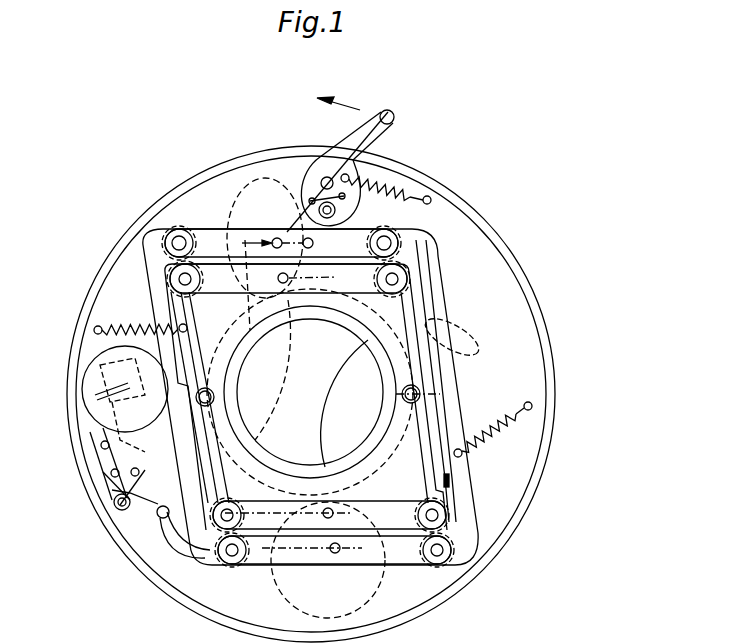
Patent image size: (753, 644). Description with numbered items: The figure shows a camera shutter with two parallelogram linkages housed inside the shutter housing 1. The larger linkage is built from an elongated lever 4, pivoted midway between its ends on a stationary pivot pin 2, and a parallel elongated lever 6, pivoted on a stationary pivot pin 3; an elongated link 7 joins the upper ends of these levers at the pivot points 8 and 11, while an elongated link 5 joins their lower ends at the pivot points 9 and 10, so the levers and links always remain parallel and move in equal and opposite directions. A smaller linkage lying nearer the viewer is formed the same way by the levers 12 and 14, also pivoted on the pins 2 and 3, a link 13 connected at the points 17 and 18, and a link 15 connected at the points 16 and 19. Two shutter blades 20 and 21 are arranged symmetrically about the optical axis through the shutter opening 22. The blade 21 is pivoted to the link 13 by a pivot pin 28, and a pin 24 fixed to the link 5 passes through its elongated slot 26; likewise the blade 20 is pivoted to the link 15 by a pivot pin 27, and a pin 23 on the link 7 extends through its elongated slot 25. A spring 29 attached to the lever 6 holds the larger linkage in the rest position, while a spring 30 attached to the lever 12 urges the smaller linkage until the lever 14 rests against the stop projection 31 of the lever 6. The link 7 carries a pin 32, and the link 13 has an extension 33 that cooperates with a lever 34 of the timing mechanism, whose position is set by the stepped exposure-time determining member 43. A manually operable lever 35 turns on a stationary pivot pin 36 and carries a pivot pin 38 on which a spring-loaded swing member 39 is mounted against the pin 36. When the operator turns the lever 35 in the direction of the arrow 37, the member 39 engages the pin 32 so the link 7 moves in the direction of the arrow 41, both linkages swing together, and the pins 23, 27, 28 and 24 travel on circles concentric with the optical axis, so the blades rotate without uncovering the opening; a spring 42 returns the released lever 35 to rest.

The shutter housing 1 is at (207, 172).
The stationary pivot pin 2 is at (205, 388).
The stationary pivot pin 3 is at (419, 394).
The elongated lever 4 is at (193, 497).
The elongated link 5 is at (370, 558).
The elongated lever 6 is at (438, 324).
The elongated link 7 is at (218, 240).
The pivot point 8 is at (181, 236).
The pivot point 9 is at (231, 553).
The pivot point 10 is at (437, 556).
The pivot point 11 is at (391, 242).
The lever 12 is at (133, 494).
The link 13 is at (410, 516).
The lever 14 is at (413, 313).
The link 15 is at (207, 283).
The pivot point 16 is at (179, 279).
The pivot point 17 is at (225, 518).
The pivot point 18 is at (438, 515).
The pivot point 19 is at (398, 277).
The shutter blade 20 is at (293, 374).
The shutter blade 21 is at (327, 400).
The shutter opening 22 is at (345, 318).
The pin 23 is at (274, 239).
The pin 24 is at (338, 546).
The elongated slot 25 is at (318, 214).
The elongated slot 26 is at (338, 578).
The pivot pin 27 is at (279, 282).
The pivot pin 28 is at (325, 508).
The spring 29 is at (500, 433).
The spring 30 is at (148, 325).
The projection 31 is at (451, 481).
The pin 32 is at (313, 243).
The extension 33 is at (178, 537).
The lever 34 is at (156, 513).
The manually operable lever 35 is at (388, 114).
The stationary pivot pin 36 is at (328, 177).
The arrow 37 is at (349, 103).
The pivot pin 38 is at (313, 200).
The swing member 39 is at (290, 206).
The arrow 41 is at (262, 237).
The spring 42 is at (398, 190).
The exposure-time determining member 43 is at (118, 388).